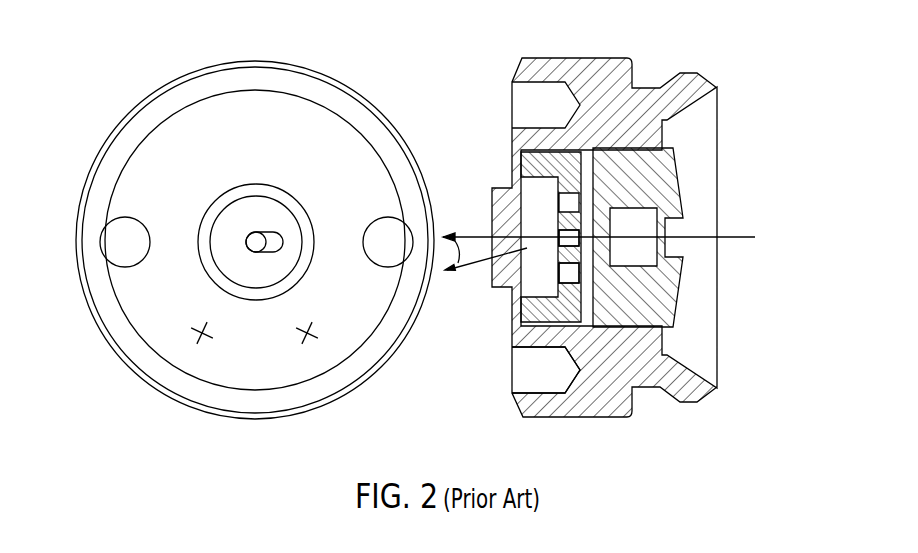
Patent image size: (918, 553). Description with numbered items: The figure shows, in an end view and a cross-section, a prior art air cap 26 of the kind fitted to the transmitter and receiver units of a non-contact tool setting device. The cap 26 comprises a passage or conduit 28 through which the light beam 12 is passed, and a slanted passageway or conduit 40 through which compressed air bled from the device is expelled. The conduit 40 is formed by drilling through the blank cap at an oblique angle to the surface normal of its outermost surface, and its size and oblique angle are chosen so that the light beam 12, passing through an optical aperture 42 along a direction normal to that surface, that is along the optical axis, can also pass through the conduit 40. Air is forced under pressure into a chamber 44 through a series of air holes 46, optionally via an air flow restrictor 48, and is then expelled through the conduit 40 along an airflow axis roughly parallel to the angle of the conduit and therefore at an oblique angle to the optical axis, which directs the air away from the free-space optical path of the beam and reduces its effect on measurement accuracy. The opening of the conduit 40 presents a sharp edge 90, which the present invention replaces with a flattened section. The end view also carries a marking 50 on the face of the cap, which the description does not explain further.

The light beam 12 is at (731, 237).
The air cap 26 is at (699, 48).
The passage or conduit 28 is at (255, 253).
The slanted conduit 40 is at (553, 320).
The optical aperture 42 is at (578, 240).
The chamber 44 is at (531, 190).
The air holes 46 is at (567, 270).
The air flow restrictor 48 is at (622, 162).
The spray angle marking 50 is at (254, 349).
The sharp edge 90 is at (501, 253).